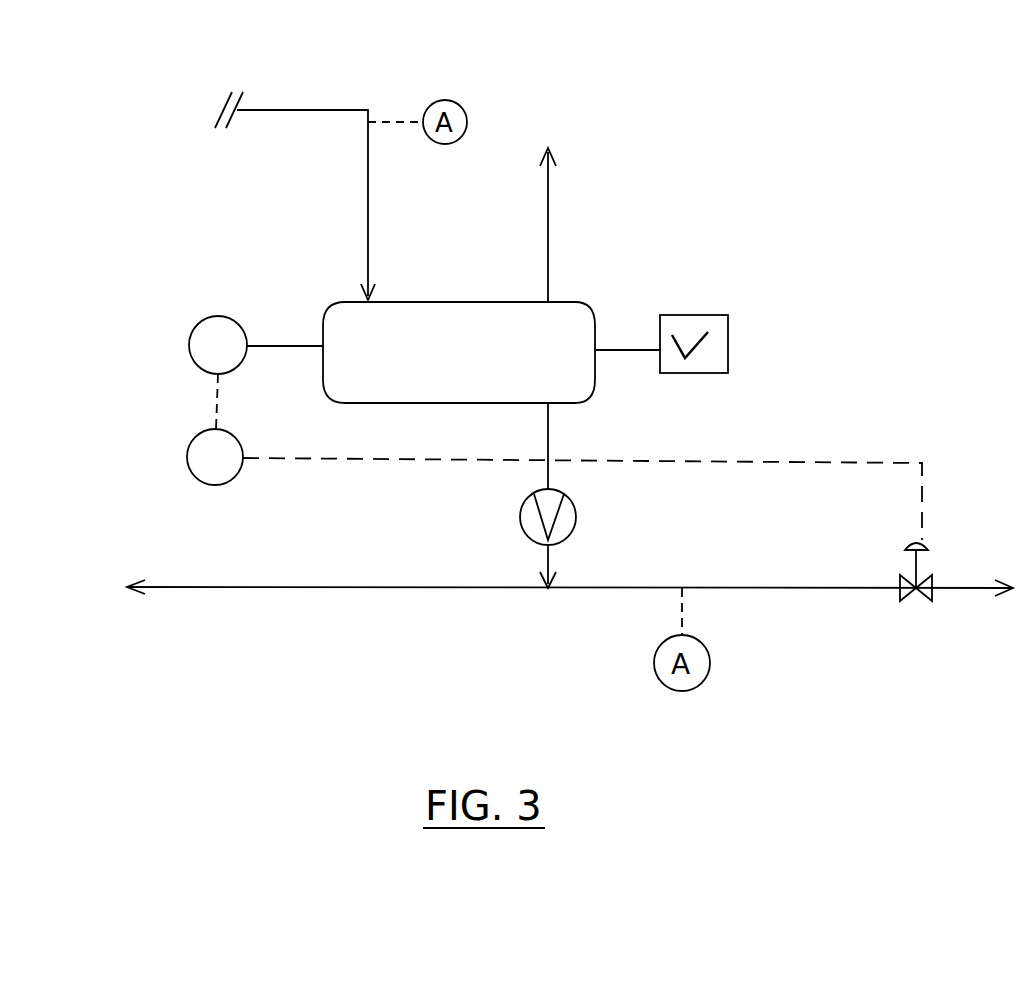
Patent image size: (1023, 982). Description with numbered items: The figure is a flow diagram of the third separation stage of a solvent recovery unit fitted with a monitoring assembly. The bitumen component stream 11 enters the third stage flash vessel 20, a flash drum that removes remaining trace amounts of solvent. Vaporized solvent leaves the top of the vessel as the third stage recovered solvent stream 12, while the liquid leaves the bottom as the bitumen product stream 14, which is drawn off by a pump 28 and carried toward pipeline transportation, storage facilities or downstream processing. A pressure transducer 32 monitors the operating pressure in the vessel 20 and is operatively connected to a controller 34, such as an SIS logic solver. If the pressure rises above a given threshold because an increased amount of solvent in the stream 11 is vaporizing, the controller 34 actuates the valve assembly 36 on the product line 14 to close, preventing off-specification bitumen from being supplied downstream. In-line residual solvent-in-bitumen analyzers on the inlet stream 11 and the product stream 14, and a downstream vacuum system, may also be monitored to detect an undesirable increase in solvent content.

The bitumen component stream 11 is at (335, 110).
The third stage recovered solvent stream 12 is at (548, 222).
The bitumen product stream 14 is at (548, 437).
The third stage flash vessel 20 is at (465, 374).
The pump 28 is at (520, 508).
The pressure transducer 32 is at (218, 316).
The controller 34 is at (190, 437).
The valve assembly 36 is at (898, 594).